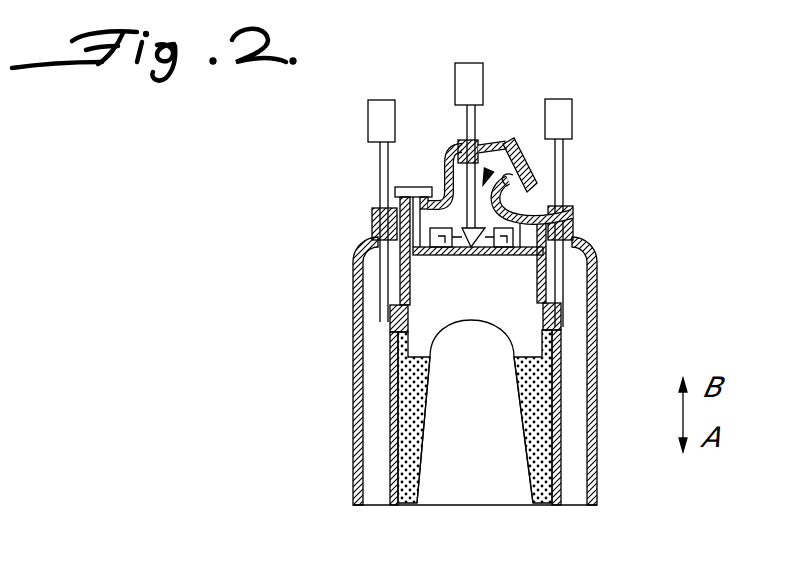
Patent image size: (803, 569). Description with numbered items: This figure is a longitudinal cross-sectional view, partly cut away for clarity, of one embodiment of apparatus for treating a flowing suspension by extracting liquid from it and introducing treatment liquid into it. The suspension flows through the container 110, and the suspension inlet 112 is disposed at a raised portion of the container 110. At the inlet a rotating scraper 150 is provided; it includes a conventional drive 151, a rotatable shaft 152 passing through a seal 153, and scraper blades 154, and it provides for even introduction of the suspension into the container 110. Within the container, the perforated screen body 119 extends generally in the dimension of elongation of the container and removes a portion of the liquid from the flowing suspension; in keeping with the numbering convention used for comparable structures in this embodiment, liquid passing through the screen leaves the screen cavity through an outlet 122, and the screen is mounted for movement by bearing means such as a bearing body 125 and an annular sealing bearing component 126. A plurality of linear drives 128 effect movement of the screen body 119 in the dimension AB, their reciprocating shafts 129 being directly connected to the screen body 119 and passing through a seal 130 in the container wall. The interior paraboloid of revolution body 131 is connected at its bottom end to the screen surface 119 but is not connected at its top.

The container 110 is at (595, 357).
The suspension inlet 112 is at (540, 196).
The screen body 119 is at (326, 393).
The flanged collar 122 is at (424, 187).
The inner tube upper wall 125 is at (406, 278).
The seal ring 126 is at (400, 321).
The linear drives 128 is at (369, 138).
The reciprocating shafts 129 is at (378, 163).
The bushing 130 is at (373, 215).
The paraboloid of revolution body 131 is at (450, 452).
The rotating scraper 150 is at (506, 142).
The drive 151 is at (492, 41).
The rotatable shaft 152 is at (467, 124).
The seal 153 is at (488, 172).
The scraper blades 154 is at (452, 266).